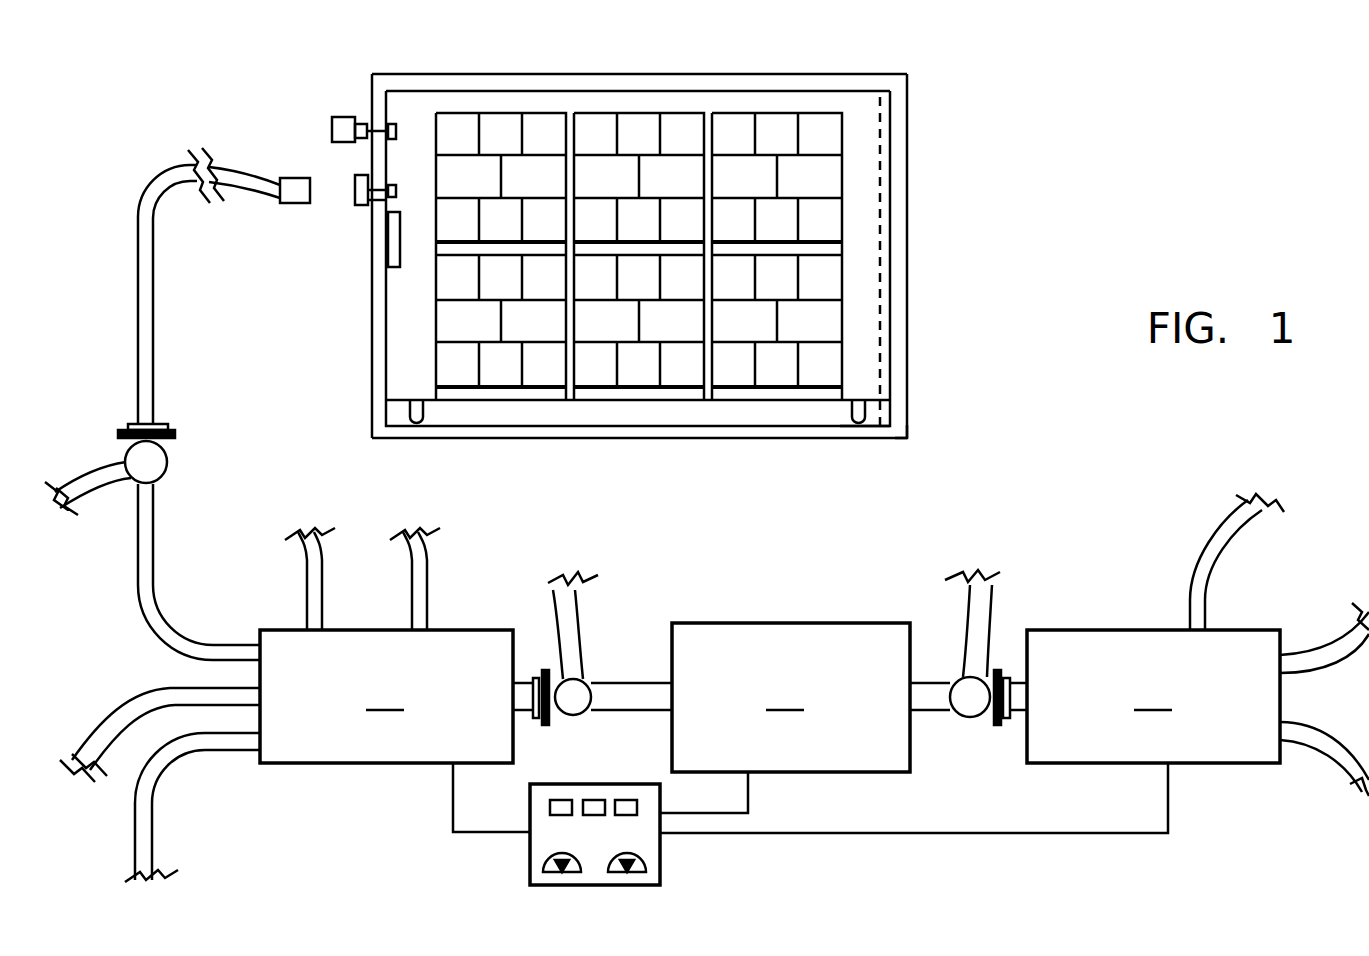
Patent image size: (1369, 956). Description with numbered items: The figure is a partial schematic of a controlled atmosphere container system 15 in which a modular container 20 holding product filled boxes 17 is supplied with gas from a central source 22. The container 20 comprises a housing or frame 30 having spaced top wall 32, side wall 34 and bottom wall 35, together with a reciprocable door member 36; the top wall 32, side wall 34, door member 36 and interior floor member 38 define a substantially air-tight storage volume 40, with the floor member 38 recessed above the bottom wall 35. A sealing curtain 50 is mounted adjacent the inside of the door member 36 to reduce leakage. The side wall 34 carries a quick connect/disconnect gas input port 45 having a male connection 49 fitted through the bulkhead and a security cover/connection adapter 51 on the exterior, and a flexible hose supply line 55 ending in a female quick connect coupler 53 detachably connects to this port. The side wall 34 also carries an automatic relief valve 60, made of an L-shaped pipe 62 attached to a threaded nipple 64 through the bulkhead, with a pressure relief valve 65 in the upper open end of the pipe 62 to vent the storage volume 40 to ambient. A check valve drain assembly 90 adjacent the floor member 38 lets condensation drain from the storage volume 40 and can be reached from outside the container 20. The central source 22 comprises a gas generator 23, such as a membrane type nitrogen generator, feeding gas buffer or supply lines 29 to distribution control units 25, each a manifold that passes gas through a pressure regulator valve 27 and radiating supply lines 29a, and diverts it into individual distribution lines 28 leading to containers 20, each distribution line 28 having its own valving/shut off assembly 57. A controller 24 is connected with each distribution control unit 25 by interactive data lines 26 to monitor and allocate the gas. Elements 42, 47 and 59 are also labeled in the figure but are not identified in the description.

The controlled atmosphere container system 15 is at (1052, 195).
The product filled boxes 17 is at (635, 140).
The container 20 is at (933, 124).
The central source of controlled atmosphere gas 22 is at (912, 578).
The gas generator 23 is at (791, 697).
The controller 24 is at (668, 862).
The distribution control unit 25 is at (770, 696).
The interactive data lines 26 is at (452, 792).
The pressure regulator valve 27 is at (587, 722).
The distribution lines 28 is at (143, 528).
The gas buffer or supply lines 29 is at (665, 688).
The supply lines 29a is at (568, 640).
The housing or frame 30 is at (907, 265).
The top wall 32 is at (548, 80).
The side wall 34 is at (378, 355).
The bottom wall 35 is at (665, 432).
The door member 36 is at (897, 215).
The interior floor member 38 is at (906, 370).
The storage volume 40 is at (790, 104).
The support foot 42 is at (856, 400).
The controlled atmosphere gas input port 45 is at (348, 177).
The inner port 47 is at (392, 255).
The male connection 49 is at (353, 190).
The sealing curtain 50 is at (882, 125).
The security cover/connection adapter 51 is at (363, 215).
The female quick connect coupler 53 is at (288, 203).
The flexible hose supply line 55 is at (232, 172).
The valving/shut off assembly 57 is at (205, 440).
The branch hose 59 is at (105, 465).
The automatic relief valve 60 is at (353, 106).
The L-shaped conduit or pipe 62 is at (335, 135).
The threaded nipple or pipe 64 is at (372, 128).
The pressure relief valve 65 is at (345, 120).
The check valve drain assembly 90 is at (875, 428).